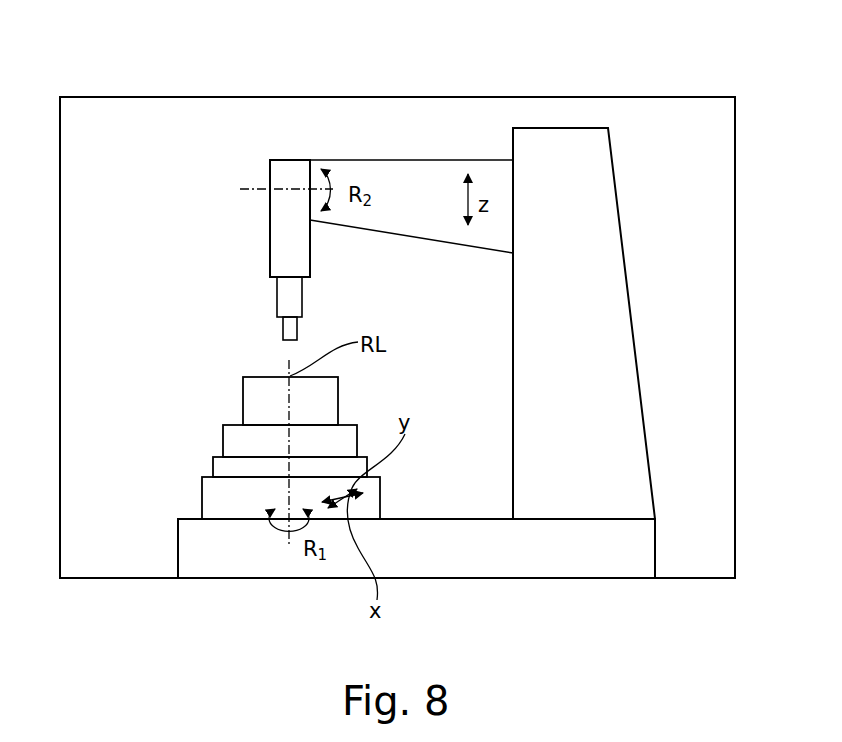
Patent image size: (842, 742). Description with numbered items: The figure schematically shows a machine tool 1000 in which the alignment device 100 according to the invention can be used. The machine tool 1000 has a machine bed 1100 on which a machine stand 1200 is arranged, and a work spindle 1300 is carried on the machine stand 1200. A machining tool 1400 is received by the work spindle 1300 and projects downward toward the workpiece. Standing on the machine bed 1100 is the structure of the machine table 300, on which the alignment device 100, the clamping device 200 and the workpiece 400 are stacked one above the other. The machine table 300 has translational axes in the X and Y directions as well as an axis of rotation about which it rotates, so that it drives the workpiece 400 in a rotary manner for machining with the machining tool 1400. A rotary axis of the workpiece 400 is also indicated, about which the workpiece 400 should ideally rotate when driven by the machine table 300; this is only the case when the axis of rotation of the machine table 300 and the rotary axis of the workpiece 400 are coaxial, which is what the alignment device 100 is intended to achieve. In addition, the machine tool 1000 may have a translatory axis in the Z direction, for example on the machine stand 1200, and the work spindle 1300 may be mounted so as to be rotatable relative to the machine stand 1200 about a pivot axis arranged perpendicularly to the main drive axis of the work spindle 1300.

The machine tool 1000 is at (219, 94).
The machine bed 1100 is at (430, 548).
The machine stand 1200 is at (590, 275).
The work spindle 1300 is at (264, 227).
The machining tool 1400 is at (290, 330).
The alignment device 100 is at (222, 468).
The clamping device 200 is at (235, 440).
The machine table 300 is at (217, 503).
The workpiece 400 is at (253, 400).